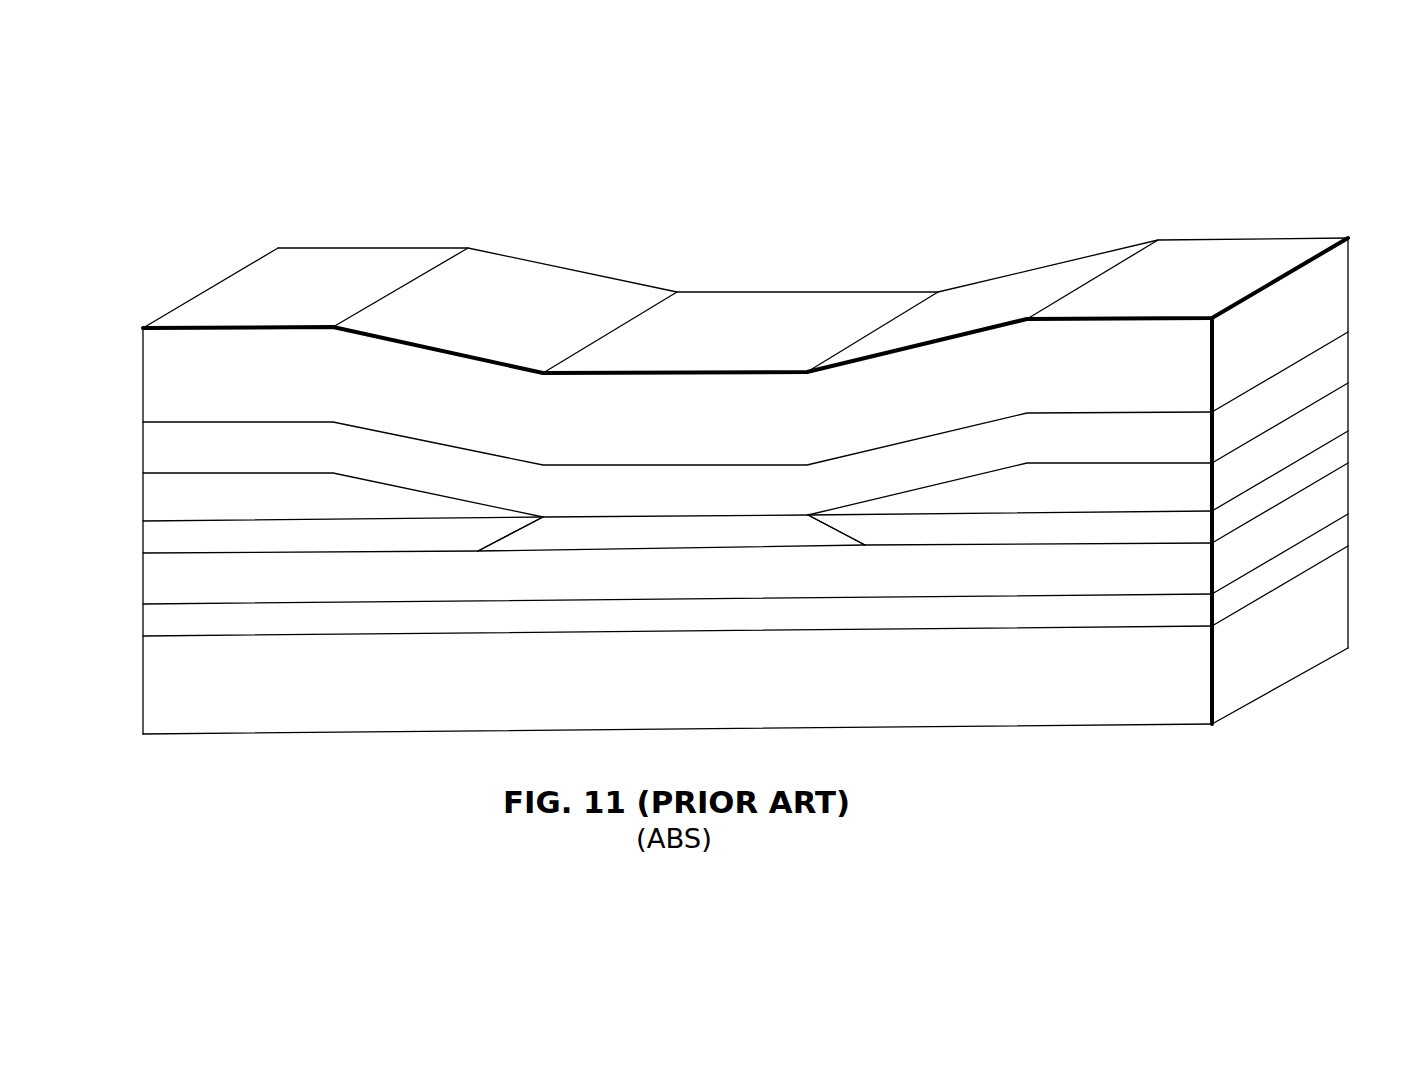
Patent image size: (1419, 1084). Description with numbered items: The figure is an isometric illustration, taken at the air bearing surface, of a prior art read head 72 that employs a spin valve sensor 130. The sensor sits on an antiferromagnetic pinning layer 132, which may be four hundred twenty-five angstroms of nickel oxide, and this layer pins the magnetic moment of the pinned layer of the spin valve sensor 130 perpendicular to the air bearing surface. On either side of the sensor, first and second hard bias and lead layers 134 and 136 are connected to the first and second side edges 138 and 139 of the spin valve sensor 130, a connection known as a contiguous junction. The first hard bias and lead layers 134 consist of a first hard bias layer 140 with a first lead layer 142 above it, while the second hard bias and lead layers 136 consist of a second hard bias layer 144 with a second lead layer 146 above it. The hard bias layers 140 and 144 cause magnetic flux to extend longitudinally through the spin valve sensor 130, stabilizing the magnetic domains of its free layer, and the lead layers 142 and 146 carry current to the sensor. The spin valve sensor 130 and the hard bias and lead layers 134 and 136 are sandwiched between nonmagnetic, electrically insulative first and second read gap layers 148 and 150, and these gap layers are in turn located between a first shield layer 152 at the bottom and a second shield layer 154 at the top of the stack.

The read head 72 is at (833, 240).
The spin valve sensor 130 is at (583, 492).
The antiferromagnetic pinning layer 132 is at (870, 582).
The first hard bias and lead layers 134 is at (132, 478).
The second hard bias and lead layers 136 is at (1358, 380).
The first side edge 138 is at (490, 538).
The second side edge 139 is at (862, 537).
The first hard bias layer 140 is at (177, 538).
The first lead layer 142 is at (175, 496).
The second hard bias layer 144 is at (1148, 528).
The second lead layer 146 is at (1152, 490).
The first read gap layer 148 is at (380, 617).
The second read gap layer 150 is at (437, 458).
The first shield layer 152 is at (263, 710).
The second shield layer 154 is at (578, 292).